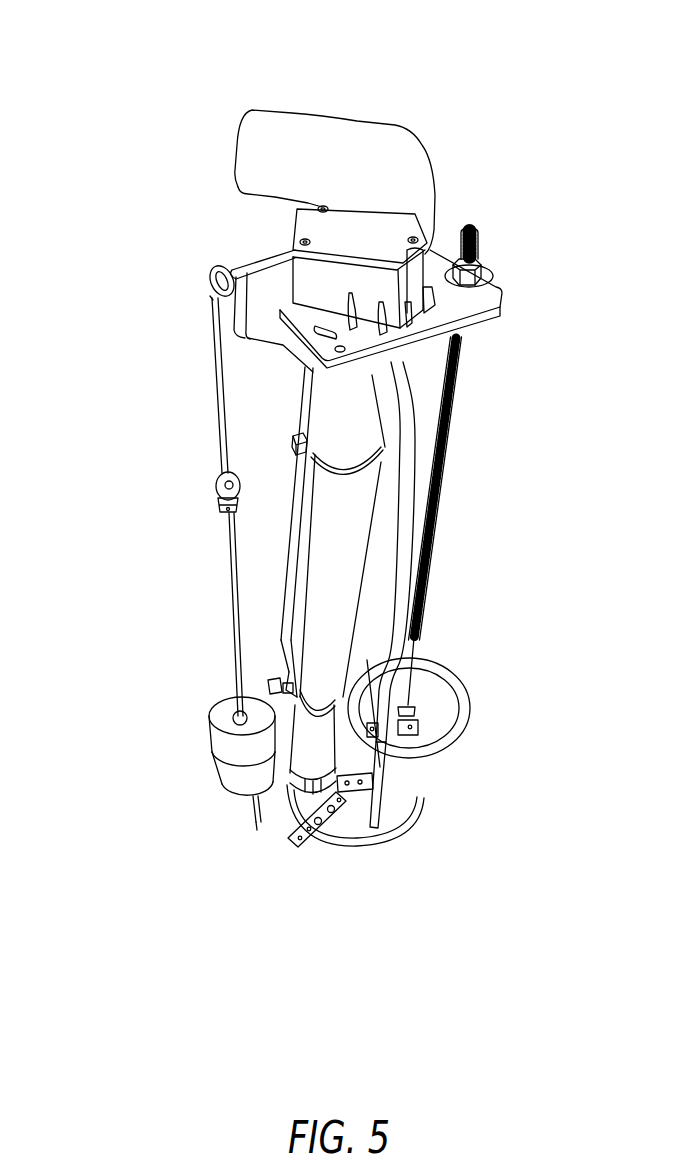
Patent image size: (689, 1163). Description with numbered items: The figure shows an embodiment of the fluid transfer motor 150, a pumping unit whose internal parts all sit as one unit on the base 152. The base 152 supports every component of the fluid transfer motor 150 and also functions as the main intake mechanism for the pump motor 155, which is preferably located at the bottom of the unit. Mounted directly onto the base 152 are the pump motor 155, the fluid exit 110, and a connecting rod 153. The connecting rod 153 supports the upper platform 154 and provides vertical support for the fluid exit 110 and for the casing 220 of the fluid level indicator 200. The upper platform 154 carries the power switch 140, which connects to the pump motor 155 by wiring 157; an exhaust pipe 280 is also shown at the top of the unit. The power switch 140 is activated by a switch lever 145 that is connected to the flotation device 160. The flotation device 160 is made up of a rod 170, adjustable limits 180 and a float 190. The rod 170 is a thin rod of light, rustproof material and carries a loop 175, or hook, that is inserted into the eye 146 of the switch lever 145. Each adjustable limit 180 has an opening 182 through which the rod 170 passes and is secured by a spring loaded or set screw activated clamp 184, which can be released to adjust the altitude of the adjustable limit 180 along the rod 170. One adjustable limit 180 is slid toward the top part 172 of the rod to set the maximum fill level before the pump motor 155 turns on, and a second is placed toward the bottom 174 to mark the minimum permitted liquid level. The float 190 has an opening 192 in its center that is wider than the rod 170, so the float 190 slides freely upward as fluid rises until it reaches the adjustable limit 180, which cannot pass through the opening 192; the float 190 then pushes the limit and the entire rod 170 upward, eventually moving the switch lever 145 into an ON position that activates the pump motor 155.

The fluid transfer motor 150 is at (362, 44).
The exhaust pipe 280 is at (258, 127).
The power switch 140 is at (285, 226).
The eye 146 is at (222, 265).
The switch lever 145 is at (245, 272).
The loop 175 is at (233, 328).
The top part of rod 172 is at (200, 306).
The rod 170 is at (220, 380).
The flotation device 160 is at (176, 478).
The opening 182 is at (233, 482).
The adjustable limit 180 is at (217, 488).
The clamp 184 is at (220, 510).
The fluid level indicator 200 is at (273, 532).
The casing 220 is at (297, 570).
The connecting rod 153 is at (437, 497).
The upper platform 154 is at (498, 290).
The fluid exit 110 is at (337, 633).
The wiring 157 is at (398, 647).
The pump motor 155 is at (417, 752).
The base 152 is at (407, 820).
The opening 192 is at (233, 716).
The float 190 is at (201, 725).
The bottom of rod 174 is at (255, 850).